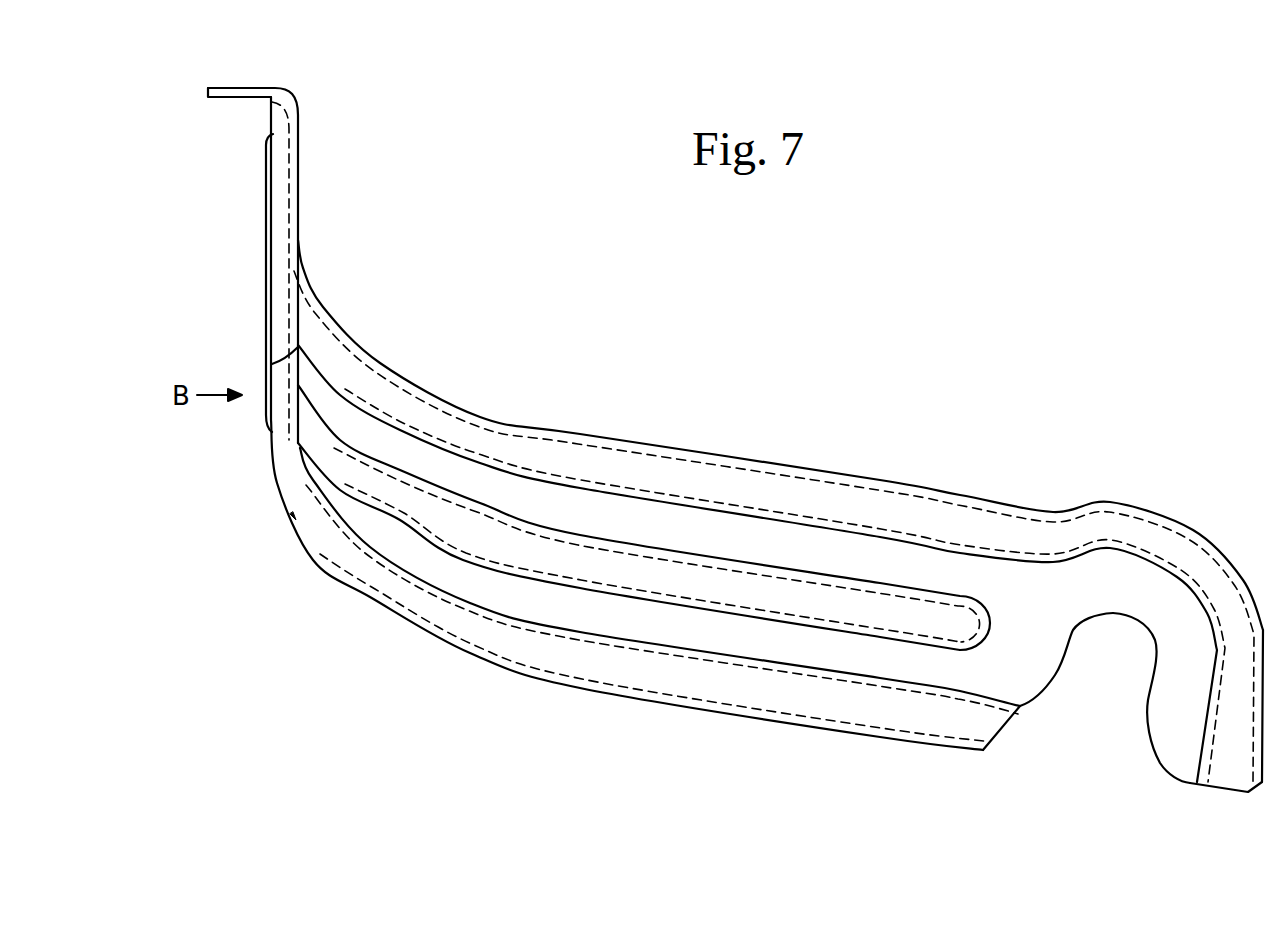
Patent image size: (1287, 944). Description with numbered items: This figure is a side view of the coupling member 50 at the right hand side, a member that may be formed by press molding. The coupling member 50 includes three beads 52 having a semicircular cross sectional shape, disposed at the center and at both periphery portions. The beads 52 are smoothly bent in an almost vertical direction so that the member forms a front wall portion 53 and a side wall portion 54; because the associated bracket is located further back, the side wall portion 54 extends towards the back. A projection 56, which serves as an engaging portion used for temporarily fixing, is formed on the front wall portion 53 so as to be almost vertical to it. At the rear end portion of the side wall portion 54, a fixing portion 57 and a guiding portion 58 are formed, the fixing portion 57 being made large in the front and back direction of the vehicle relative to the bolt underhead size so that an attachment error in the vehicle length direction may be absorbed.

The coupling member 50 is at (762, 457).
The beads 52 is at (897, 512).
The front wall portion 53 is at (264, 245).
The side wall portion 54 is at (1022, 595).
The projection 56 is at (208, 88).
The fixing portion 57 is at (1153, 660).
The guiding portion 58 is at (1020, 707).